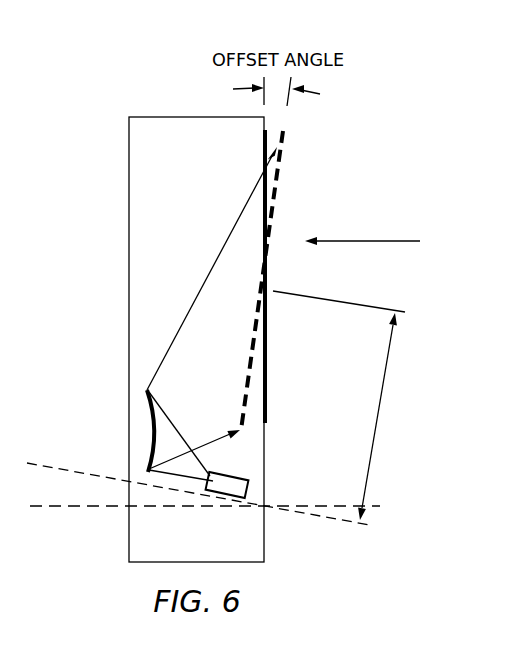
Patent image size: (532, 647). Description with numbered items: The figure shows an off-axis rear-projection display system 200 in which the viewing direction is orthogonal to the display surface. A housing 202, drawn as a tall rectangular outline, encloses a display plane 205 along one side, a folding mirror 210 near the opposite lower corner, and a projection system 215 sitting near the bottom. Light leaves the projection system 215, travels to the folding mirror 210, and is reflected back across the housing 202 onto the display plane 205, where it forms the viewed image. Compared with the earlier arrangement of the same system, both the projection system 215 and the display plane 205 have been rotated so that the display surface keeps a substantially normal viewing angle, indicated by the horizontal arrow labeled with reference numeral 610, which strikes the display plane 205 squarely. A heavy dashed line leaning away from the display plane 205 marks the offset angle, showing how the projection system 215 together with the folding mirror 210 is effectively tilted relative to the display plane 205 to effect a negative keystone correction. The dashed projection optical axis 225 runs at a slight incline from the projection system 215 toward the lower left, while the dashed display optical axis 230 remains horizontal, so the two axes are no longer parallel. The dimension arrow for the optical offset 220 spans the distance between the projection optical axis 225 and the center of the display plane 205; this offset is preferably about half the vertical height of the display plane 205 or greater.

The rear-projection display system 200 is at (150, 80).
The housing 202 is at (129, 246).
The display plane 205 is at (268, 384).
The folding mirror 210 is at (150, 412).
The projection system 215 is at (230, 478).
The optical offset 220 is at (378, 418).
The projection optical axis 225 is at (54, 468).
The display optical axis 230 is at (70, 508).
The viewing angle 610 is at (366, 240).